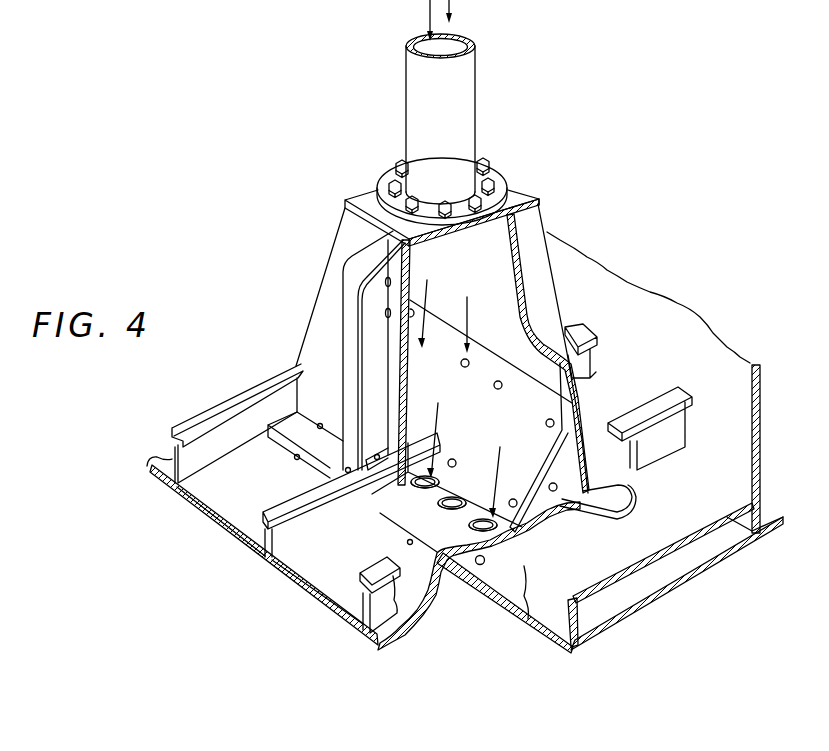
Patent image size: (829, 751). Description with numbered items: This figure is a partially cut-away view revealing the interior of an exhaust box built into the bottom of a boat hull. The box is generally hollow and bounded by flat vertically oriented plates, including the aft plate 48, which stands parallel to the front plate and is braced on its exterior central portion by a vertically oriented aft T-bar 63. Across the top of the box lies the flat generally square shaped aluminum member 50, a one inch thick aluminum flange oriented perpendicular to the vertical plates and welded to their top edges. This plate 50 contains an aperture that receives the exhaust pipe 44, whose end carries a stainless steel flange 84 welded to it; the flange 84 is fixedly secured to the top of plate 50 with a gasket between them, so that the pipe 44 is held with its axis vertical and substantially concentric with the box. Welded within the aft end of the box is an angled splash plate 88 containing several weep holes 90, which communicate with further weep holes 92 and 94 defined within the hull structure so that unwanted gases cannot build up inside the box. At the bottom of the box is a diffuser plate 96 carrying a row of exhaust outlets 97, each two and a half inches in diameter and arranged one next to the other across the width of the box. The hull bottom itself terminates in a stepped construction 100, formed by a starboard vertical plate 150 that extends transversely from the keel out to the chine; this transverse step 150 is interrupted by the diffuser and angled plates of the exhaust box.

The exhaust pipe 44 is at (468, 95).
The stainless steel flange 84 is at (498, 177).
The flat generally square shaped aluminum member 50 is at (526, 198).
The aft plate 48 is at (333, 268).
The aft T-bar 63 is at (352, 330).
The angled splash plate 88 is at (623, 400).
The weep holes 90 is at (453, 458).
The exhaust outlets 97 is at (490, 510).
The diffuser plate 96 is at (407, 542).
The weep hole 92 is at (478, 566).
The weep hole 94 is at (556, 492).
The starboard vertical plate 150 is at (557, 613).
The stepped construction 100 is at (506, 636).